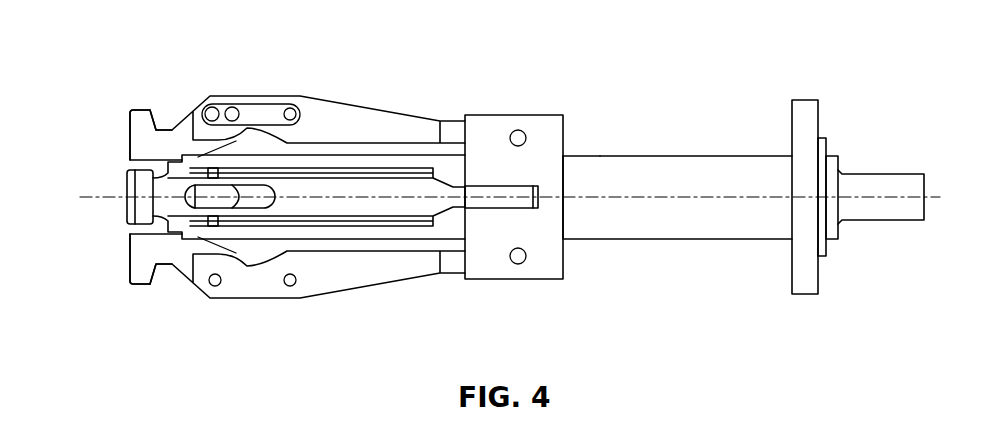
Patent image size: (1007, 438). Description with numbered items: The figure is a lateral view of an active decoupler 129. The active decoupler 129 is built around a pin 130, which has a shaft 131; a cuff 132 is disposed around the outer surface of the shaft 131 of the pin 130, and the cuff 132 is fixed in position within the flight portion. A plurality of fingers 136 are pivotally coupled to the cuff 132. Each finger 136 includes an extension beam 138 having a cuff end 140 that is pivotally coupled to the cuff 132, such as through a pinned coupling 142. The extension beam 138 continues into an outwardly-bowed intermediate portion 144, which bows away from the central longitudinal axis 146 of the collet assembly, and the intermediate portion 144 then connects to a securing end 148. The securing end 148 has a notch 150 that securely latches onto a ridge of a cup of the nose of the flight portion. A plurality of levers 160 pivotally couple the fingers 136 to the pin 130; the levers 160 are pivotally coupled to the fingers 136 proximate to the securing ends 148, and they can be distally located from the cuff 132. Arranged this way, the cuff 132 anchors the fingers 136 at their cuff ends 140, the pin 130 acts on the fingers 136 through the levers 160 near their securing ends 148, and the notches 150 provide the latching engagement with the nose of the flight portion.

The active decoupler 129 is at (491, 189).
The pin 130 is at (710, 148).
The shaft 131 is at (583, 155).
The cuff 132 is at (556, 105).
The fingers 136 is at (370, 106).
The extension beam 138 is at (408, 115).
The cuff end 140 is at (507, 203).
The pinned coupling 142 is at (518, 130).
The intermediate portion 144 is at (312, 97).
The central longitudinal axis 146 is at (105, 199).
The securing end 148 is at (143, 285).
The notch 150 is at (165, 264).
The levers 160 is at (230, 148).